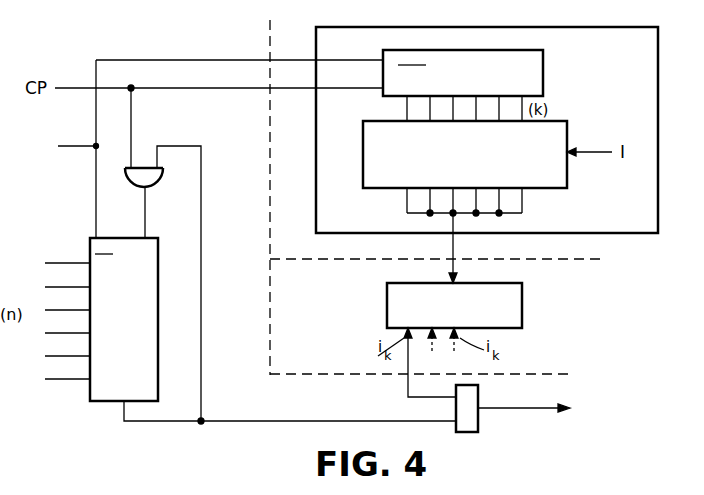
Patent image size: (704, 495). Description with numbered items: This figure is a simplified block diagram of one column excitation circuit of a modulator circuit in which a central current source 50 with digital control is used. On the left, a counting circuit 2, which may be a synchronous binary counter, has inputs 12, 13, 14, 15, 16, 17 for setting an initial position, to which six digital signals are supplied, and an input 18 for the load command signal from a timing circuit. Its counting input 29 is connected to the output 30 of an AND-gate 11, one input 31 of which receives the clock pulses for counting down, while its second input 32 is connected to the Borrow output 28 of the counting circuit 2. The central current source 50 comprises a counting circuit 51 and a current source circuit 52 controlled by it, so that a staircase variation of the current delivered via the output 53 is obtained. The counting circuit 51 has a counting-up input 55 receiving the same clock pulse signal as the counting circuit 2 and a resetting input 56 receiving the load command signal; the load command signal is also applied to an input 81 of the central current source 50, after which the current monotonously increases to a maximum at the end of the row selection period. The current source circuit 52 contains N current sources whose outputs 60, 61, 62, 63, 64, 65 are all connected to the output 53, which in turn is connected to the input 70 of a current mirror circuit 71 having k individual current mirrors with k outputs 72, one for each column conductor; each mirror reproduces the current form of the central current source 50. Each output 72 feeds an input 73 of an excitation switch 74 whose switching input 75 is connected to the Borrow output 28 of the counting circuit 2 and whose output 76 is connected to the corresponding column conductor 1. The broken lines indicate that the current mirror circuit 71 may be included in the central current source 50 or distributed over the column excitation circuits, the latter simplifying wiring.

The column conductor 1 is at (534, 409).
The counting circuit 2 is at (158, 342).
The AND-gate 11 is at (161, 181).
The input 12 is at (88, 268).
The input 13 is at (88, 291).
The input 14 is at (88, 314).
The input 15 is at (88, 337).
The input 16 is at (88, 360).
The input 17 is at (88, 383).
The input for load command signal 18 is at (92, 238).
The Borrow output 28 is at (122, 412).
The counting input 29 is at (140, 268).
The output of the AND-gate 30 is at (142, 191).
The input of the AND-gate 31 is at (128, 167).
The second input of the AND-gate 32 is at (160, 168).
The central current source 50 is at (658, 96).
The counting circuit 51 is at (543, 75).
The current source circuit 52 is at (567, 135).
The output 53 is at (447, 238).
The counting-up input 55 is at (383, 90).
The resetting input 56 is at (383, 58).
The current source output 60 is at (404, 198).
The current source output 61 is at (418, 185).
The current source output 62 is at (442, 185).
The current source output 63 is at (466, 185).
The current source output 64 is at (490, 185).
The current source output 65 is at (524, 198).
The input of current mirror circuit 70 is at (451, 290).
The current mirror circuit 71 is at (522, 295).
The output of current mirror 72 is at (436, 336).
The input of excitation switch 73 is at (454, 394).
The excitation switch 74 is at (478, 396).
The switching input 75 is at (456, 421).
The output of excitation switch 76 is at (478, 417).
The input of the central current source 81 is at (316, 60).